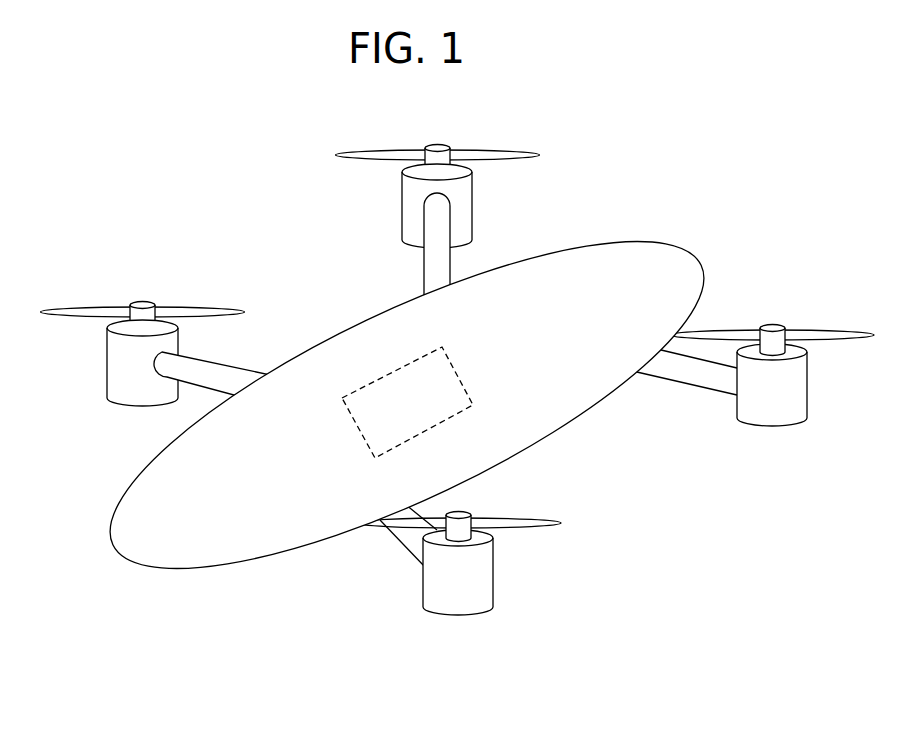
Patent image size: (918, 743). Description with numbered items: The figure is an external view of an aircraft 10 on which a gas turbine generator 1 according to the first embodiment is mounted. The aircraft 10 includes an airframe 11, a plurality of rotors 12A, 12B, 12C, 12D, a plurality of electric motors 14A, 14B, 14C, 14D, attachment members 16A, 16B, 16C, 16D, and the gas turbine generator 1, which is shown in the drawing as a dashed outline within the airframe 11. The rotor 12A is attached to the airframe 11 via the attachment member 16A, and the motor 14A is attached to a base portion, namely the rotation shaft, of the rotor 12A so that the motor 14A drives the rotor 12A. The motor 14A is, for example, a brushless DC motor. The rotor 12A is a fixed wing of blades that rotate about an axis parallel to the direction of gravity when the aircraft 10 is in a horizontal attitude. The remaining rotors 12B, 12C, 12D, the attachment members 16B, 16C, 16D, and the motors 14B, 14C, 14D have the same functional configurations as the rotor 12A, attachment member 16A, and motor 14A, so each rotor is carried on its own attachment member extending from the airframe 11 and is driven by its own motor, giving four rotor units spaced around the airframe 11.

The gas turbine generator 1 is at (480, 362).
The aircraft 10 is at (448, 383).
The airframe 11 is at (153, 562).
The rotor 12A is at (197, 307).
The rotor 12B is at (492, 150).
The rotor 12C is at (527, 528).
The rotor 12D is at (842, 342).
The electric motor 14A is at (108, 360).
The electric motor 14B is at (402, 200).
The electric motor 14C is at (458, 612).
The electric motor 14D is at (770, 428).
The attachment member 16A is at (243, 367).
The attachment member 16B is at (422, 262).
The attachment member 16C is at (403, 547).
The attachment member 16D is at (688, 386).